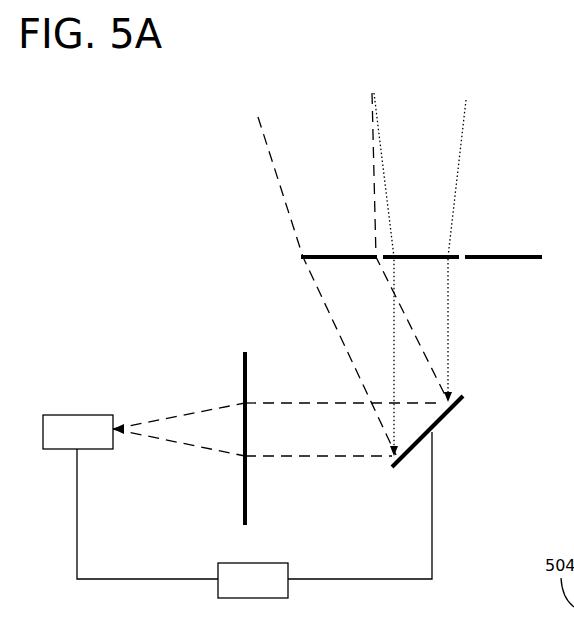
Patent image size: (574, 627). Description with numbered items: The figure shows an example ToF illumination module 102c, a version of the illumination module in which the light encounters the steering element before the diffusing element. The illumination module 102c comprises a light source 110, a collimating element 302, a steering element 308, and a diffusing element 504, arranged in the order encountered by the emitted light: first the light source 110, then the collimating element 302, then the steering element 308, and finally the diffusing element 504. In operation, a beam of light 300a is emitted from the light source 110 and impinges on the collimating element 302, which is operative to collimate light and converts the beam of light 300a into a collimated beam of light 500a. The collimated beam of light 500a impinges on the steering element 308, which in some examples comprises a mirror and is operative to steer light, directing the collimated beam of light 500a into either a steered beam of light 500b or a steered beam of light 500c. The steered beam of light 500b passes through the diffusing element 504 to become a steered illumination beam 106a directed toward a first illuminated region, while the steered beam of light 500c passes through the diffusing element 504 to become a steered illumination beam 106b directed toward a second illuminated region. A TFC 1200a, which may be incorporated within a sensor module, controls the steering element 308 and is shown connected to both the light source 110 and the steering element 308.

The ToF illumination module 102c is at (68, 220).
The steered illumination beam 106a is at (343, 144).
The steered illumination beam 106b is at (443, 130).
The diffusing element 504 is at (302, 258).
The steered beam of light 500b is at (318, 287).
The steered beam of light 500c is at (449, 300).
The collimating element 302 is at (247, 366).
The steering element 308 is at (455, 398).
The beam of light 300a is at (185, 413).
The light source 110 is at (65, 441).
The collimated beam of light 500a is at (340, 453).
The TFC 1200a is at (228, 590).